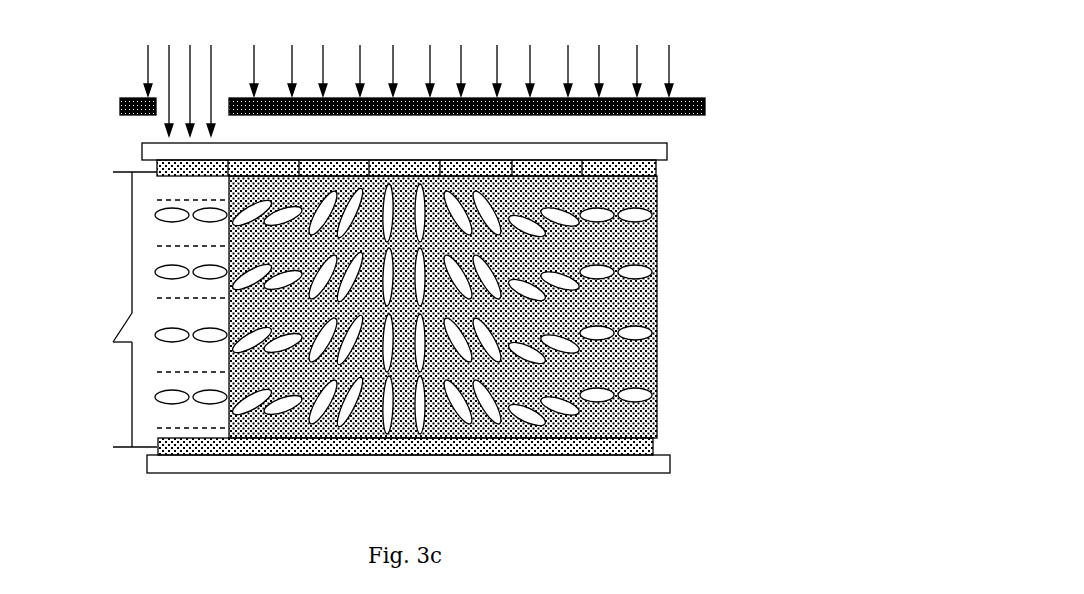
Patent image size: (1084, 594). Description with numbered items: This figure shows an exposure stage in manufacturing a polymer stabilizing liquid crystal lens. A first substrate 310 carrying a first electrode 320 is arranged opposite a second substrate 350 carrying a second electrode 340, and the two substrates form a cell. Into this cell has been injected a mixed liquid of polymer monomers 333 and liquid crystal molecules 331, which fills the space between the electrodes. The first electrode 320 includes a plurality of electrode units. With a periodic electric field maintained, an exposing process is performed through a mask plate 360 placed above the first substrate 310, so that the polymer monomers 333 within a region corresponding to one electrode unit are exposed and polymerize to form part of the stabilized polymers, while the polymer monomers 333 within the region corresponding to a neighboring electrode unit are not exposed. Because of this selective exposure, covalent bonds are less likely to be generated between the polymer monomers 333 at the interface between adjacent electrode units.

The first substrate 310 is at (668, 148).
The first electrode 320 is at (656, 167).
The liquid crystal molecules 331 is at (657, 260).
The polymer monomers 333 is at (650, 378).
The second electrode 340 is at (658, 445).
The second substrate 350 is at (648, 467).
The mask plate 360 is at (120, 108).